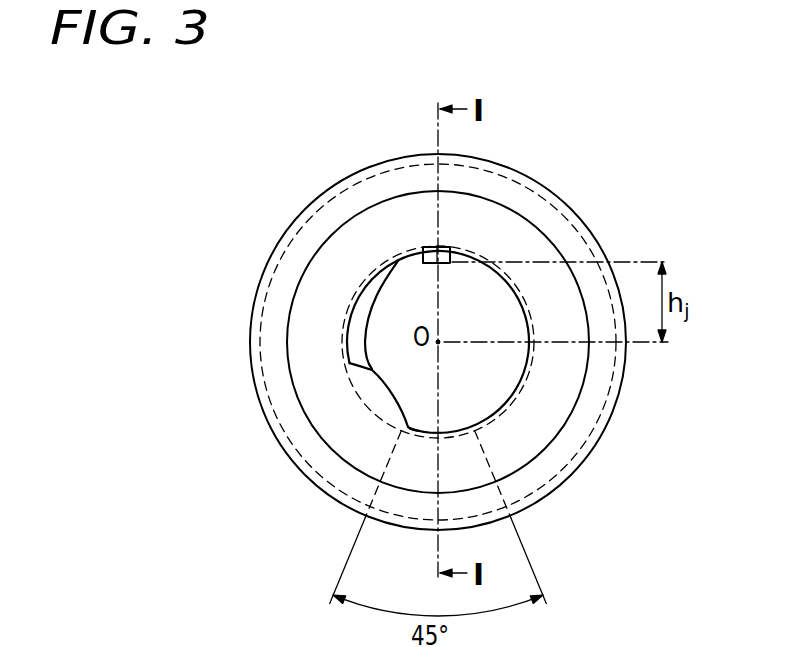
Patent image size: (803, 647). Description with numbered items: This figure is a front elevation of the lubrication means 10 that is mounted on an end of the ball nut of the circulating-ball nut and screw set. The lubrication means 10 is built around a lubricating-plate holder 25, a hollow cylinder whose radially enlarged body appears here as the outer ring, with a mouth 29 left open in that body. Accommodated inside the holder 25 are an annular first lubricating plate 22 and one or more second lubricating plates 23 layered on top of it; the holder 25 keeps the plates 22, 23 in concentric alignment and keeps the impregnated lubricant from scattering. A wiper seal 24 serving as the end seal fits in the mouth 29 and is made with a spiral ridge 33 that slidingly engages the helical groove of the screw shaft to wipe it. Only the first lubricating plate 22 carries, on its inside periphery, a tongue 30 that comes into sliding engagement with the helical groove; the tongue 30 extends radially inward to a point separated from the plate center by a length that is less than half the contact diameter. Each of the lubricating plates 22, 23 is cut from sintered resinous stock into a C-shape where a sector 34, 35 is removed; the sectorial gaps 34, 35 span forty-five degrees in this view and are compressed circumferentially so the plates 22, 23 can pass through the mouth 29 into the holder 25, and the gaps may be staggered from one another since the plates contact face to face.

The lubrication means 10 is at (553, 168).
The first lubricating plate 22 is at (587, 417).
The second lubricating plate 23 is at (558, 390).
The wiper seal 24 is at (530, 247).
The lubricating-plate holder 25 is at (288, 228).
The mouth 29 is at (395, 180).
The tongue 30 is at (421, 256).
The spiral ridge 33 is at (372, 386).
The sectorial gap 34 is at (514, 382).
The sectorial gap 35 is at (478, 452).